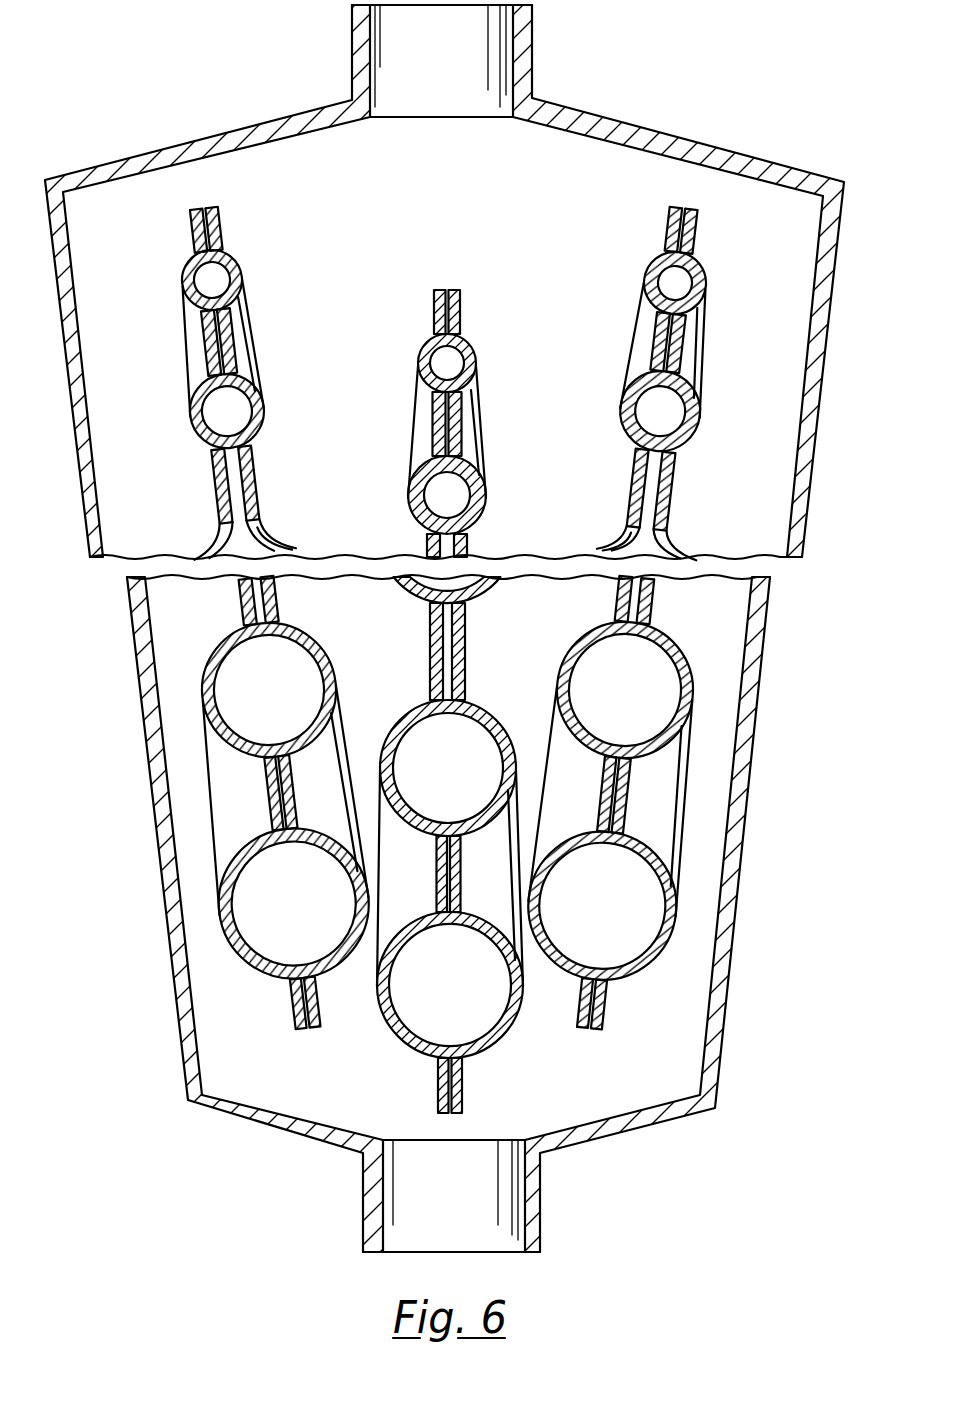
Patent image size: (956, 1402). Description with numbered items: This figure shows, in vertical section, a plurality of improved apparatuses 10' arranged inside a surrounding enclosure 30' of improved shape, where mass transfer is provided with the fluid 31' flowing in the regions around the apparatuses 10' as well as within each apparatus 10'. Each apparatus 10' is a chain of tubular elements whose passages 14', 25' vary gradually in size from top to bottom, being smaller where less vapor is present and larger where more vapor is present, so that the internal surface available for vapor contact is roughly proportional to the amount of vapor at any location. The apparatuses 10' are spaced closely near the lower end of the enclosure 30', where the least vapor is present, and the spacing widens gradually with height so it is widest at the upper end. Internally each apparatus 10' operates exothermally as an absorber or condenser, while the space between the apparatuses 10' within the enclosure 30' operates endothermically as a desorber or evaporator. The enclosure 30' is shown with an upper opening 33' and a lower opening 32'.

The apparatus 10' is at (426, 658).
The passage 14' is at (425, 658).
The passage 25' is at (426, 631).
The surrounding enclosure 30' is at (444, 628).
The fluid 31' is at (446, 625).
The outlet 32' is at (451, 1196).
The inlet 33' is at (442, 61).